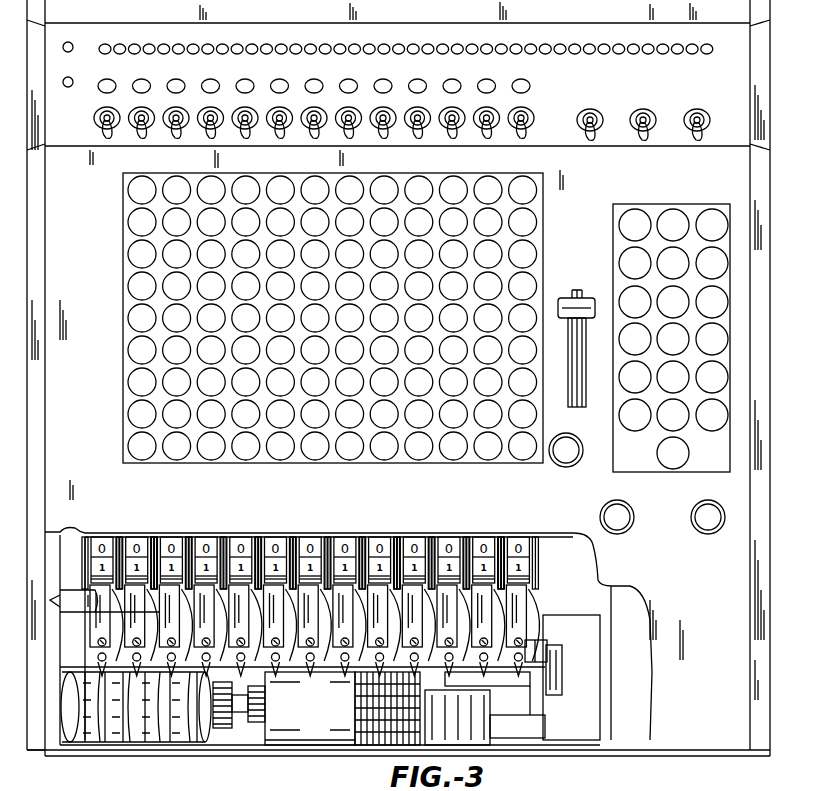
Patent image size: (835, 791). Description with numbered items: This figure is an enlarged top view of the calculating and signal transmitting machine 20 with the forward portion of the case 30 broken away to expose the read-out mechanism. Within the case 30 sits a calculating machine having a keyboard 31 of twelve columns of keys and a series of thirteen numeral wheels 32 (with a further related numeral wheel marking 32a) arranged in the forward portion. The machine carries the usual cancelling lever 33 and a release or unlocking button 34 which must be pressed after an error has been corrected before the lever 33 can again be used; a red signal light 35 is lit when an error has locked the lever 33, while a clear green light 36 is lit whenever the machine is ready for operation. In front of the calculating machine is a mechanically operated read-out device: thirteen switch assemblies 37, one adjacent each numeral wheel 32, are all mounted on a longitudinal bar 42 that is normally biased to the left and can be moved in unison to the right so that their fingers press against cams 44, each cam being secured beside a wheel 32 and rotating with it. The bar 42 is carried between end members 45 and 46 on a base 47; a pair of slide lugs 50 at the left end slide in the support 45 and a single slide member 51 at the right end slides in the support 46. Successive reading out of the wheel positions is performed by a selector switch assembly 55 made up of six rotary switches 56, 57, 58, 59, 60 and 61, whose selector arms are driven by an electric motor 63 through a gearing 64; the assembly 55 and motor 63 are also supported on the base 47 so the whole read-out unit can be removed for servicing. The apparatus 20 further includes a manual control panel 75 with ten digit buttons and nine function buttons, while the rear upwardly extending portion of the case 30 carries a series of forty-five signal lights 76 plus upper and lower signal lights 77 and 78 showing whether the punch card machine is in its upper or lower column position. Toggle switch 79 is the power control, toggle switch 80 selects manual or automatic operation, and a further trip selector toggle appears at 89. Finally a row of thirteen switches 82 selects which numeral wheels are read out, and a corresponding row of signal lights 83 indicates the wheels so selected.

The calculating and signal transmitting machine 20 is at (800, 376).
The case 30 is at (457, 508).
The keyboard 31 is at (123, 357).
The numeral wheels 32 is at (108, 540).
The counter module 32a is at (703, 784).
The cancelling lever 33 is at (570, 304).
The release or unlocking button 34 is at (571, 463).
The red signal light 35 is at (631, 510).
The green signal light 36 is at (705, 503).
The switch assemblies 37 is at (117, 613).
The longitudinal base or bar 42 is at (531, 687).
The cams 44 is at (163, 540).
The end member 45 is at (31, 760).
The end member 46 is at (561, 688).
The base 47 is at (585, 618).
The slide members or lugs 50 is at (66, 593).
The slide member 51 is at (548, 650).
The selector switch assembly 55 is at (98, 668).
The rotary switch 56 is at (85, 742).
The rotary switch 57 is at (105, 742).
The rotary switch 58 is at (123, 742).
The rotary switch 59 is at (145, 742).
The rotary switch 60 is at (170, 742).
The rotary switch 61 is at (197, 742).
The electric motor 63 is at (302, 706).
The gearing 64 is at (239, 709).
The manual control panel 75 is at (613, 242).
The signal lights 76 is at (736, 59).
The upper signal light 77 is at (72, 42).
The lower signal light 78 is at (71, 79).
The toggle switch 79 is at (697, 142).
The toggle switch 80 is at (643, 142).
The switches 82 is at (80, 128).
The signal lights 83 is at (558, 96).
The trip switch 89 is at (590, 142).